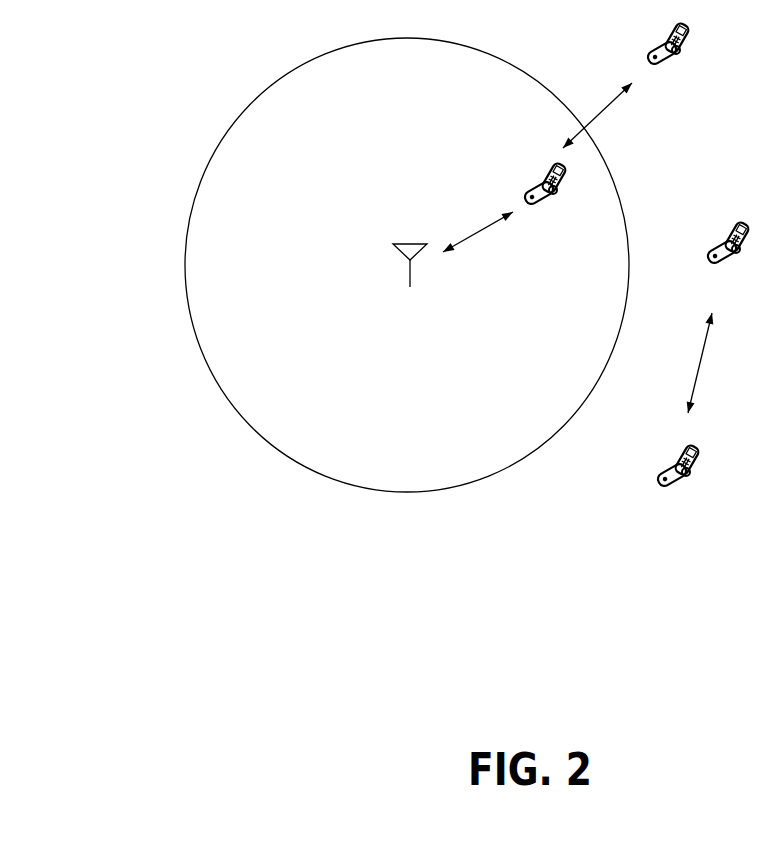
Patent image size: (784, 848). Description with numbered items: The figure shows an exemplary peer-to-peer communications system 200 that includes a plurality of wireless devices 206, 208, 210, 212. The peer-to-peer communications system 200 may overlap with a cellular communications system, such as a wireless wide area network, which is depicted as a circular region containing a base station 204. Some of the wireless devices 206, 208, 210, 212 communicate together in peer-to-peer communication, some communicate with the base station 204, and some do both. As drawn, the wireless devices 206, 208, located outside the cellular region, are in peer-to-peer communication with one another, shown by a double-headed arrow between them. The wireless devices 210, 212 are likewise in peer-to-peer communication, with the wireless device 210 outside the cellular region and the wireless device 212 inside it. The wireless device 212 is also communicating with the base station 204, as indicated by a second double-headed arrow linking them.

The peer-to-peer communications system 200 is at (136, 65).
The base station 204 is at (410, 282).
The wireless device 206 is at (728, 258).
The wireless device 208 is at (678, 481).
The wireless device 210 is at (668, 60).
The wireless device 212 is at (545, 199).